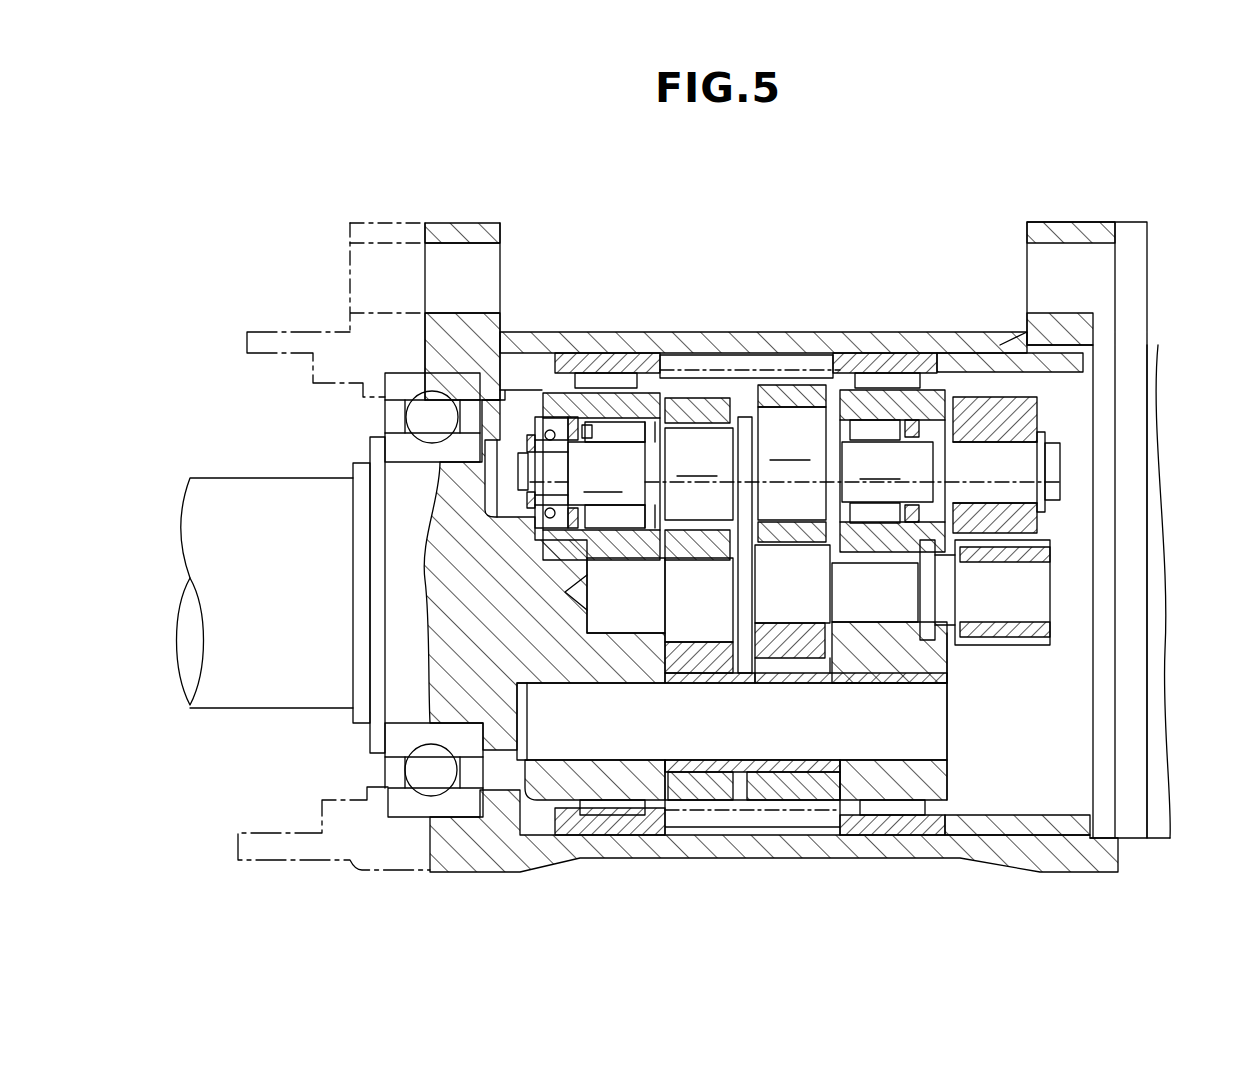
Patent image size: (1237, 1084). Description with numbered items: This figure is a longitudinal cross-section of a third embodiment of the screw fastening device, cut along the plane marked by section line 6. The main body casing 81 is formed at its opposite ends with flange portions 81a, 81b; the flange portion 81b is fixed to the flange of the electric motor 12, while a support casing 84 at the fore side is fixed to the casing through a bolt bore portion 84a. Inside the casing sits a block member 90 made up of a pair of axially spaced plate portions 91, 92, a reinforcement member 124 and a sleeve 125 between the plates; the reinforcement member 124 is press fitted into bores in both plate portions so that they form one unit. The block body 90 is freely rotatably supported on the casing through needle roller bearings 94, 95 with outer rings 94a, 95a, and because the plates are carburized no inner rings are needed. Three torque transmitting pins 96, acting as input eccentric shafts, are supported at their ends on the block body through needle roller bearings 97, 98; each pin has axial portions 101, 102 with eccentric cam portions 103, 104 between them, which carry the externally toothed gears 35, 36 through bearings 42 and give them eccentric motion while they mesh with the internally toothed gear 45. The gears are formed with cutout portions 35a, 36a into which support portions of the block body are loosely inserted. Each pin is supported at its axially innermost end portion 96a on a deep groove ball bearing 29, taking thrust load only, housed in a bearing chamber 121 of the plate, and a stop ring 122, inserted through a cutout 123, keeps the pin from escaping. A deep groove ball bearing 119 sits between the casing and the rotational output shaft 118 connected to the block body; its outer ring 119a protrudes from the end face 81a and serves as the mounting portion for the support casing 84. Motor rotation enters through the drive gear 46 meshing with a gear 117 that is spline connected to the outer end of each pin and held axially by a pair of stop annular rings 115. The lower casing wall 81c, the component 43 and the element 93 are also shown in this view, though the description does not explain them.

The section line 6- 6 is at (788, 262).
The electric motor 12 is at (1160, 770).
The deep groove ball bearing 29 is at (548, 556).
The externally toothed gear 35 is at (700, 648).
The cutout portions 35a is at (690, 765).
The externally toothed gear 36 is at (795, 648).
The cutout portions 36a is at (815, 685).
The bearings 42 is at (705, 340).
The plate 43 is at (800, 340).
The internally toothed gear 45 is at (760, 340).
The drive gear 46 is at (1047, 642).
The main body casing 81 is at (1005, 885).
The flange portion 81a is at (500, 228).
The flange portion 81b is at (1117, 268).
The housing lower wall 81c is at (428, 870).
The support casing 84 is at (318, 330).
The bolt bore portion 84a is at (350, 243).
The block member 90 is at (965, 775).
The plate portion 91 is at (545, 832).
The plate portion 92 is at (905, 832).
The bearing 93 is at (845, 835).
The needle roller bearing 94 is at (665, 340).
The outer ring 94a is at (618, 335).
The needle roller bearing 95 is at (935, 345).
The outer ring 95a is at (885, 345).
The torque transmitting pin 96 is at (1050, 470).
The axially innermost end portion 96a is at (525, 525).
The needle roller bearing 97 is at (617, 548).
The needle roller bearing 98 is at (882, 545).
The axial portion 101 is at (590, 472).
The axial portion 102 is at (892, 471).
The eccentric cam portion 103 is at (699, 479).
The eccentric cam portion 104 is at (792, 463).
The stop annular rings 115 is at (1045, 432).
The gear 117 is at (1013, 393).
The rotational output shaft 118 is at (208, 710).
The deep groove ball bearing 119 is at (413, 417).
The outer ring 119a is at (395, 380).
The bearing chamber 121 is at (480, 505).
The stop ring 122 is at (545, 435).
The cutout 123 is at (517, 440).
The reinforcement member 124 is at (925, 711).
The sleeve 125 is at (712, 685).